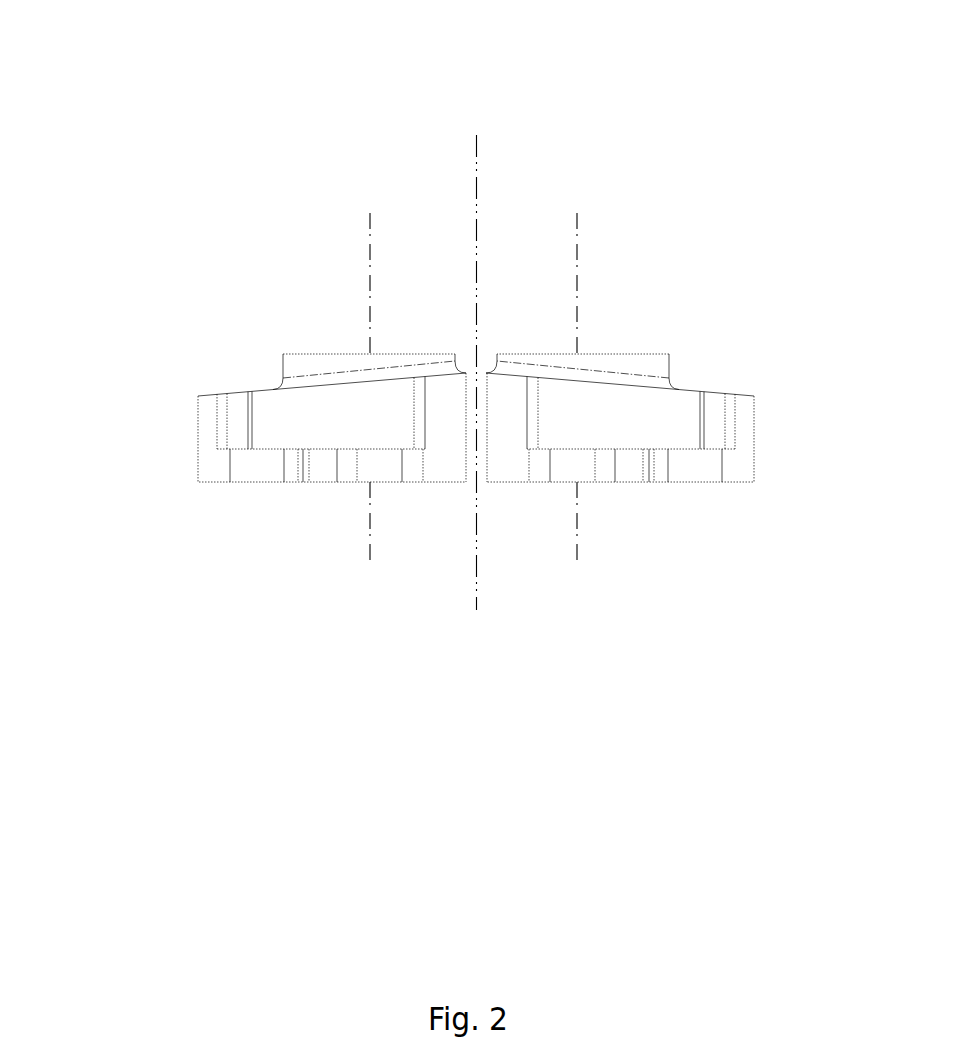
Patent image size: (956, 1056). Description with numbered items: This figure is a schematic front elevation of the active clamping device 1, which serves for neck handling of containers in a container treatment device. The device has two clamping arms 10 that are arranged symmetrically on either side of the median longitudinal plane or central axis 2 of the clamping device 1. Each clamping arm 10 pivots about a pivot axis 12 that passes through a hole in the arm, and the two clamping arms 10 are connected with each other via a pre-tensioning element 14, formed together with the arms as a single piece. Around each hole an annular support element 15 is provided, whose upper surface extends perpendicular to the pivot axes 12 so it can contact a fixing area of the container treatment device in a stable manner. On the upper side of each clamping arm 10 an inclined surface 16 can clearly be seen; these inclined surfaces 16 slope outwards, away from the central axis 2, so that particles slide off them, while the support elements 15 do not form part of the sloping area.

The active clamping device 1 is at (173, 143).
The central axis 2 is at (477, 190).
The clamping arm 10 is at (208, 443).
The pivot axis 12 is at (370, 257).
The pre-tensioning element 14 is at (468, 389).
The support element 15 is at (328, 353).
The inclined surface 16 is at (255, 389).